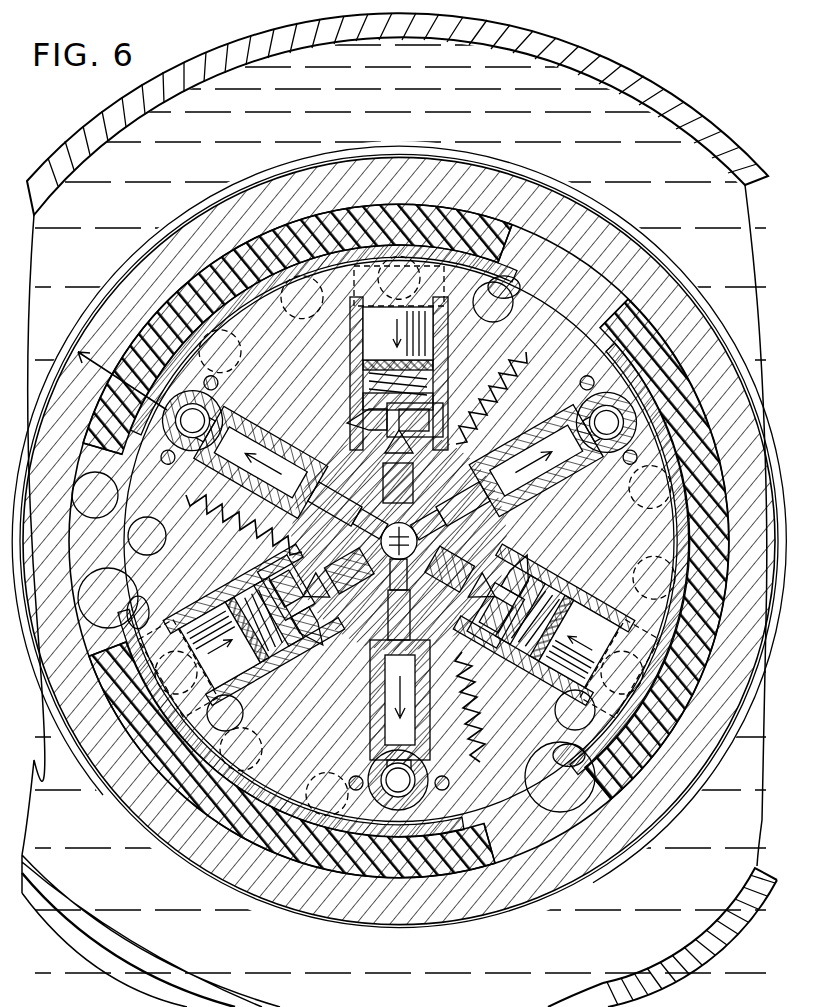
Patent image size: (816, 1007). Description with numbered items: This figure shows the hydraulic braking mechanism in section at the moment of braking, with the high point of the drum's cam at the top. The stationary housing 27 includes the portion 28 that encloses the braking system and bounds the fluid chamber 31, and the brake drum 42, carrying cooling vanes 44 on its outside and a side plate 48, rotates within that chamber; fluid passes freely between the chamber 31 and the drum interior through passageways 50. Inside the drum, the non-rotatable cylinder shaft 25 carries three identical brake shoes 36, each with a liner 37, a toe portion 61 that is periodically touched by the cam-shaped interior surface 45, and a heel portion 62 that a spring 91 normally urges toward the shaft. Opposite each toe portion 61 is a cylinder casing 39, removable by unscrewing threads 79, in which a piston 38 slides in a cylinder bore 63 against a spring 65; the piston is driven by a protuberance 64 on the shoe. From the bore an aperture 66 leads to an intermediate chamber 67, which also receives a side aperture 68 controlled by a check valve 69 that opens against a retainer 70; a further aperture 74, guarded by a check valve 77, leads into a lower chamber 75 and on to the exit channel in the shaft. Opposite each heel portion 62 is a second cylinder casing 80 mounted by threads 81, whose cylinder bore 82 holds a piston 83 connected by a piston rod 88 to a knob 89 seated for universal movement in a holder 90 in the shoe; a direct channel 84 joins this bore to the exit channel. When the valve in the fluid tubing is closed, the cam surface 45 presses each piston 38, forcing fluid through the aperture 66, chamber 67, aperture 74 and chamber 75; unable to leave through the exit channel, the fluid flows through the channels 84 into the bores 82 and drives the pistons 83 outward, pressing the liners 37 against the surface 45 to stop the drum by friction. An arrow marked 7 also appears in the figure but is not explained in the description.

The section line arrow 7 is at (122, 369).
The cylinder shaft 25 is at (505, 514).
The housing 27 is at (696, 107).
The remaining portion of the housing 28 is at (72, 140).
The chamber for fluid 31 is at (123, 173).
The brake shoe 36 is at (399, 538).
The liner 37 is at (437, 520).
The piston 38 is at (370, 330).
The cylinder casing 39 is at (446, 360).
The brake drum 42 is at (399, 540).
The vanes 44 is at (399, 494).
The interior surface 45 is at (399, 541).
The side plate 48 is at (393, 497).
The passageways 50 is at (128, 540).
The toe portion 61 is at (378, 485).
The heel portion 62 is at (396, 582).
The cylinder bore 63 is at (352, 345).
The protuberance 64 is at (387, 291).
The spring 65 is at (446, 368).
The aperture 66 is at (365, 388).
The intermediate chamber 67 is at (447, 388).
The aperture 68 is at (350, 415).
The check valve 69 is at (360, 424).
The retainer 70 is at (440, 410).
The aperture 74 is at (329, 426).
The lower chamber 75 is at (405, 460).
The check valve 77 is at (345, 452).
The threads 79 is at (345, 514).
The second cylinder casing 80 is at (250, 425).
The threads 81 is at (360, 655).
The cylinder bore 82 is at (250, 490).
The piston 83 is at (235, 478).
The direct channel 84 is at (365, 680).
The piston rod 88 is at (185, 462).
The knob 89 is at (228, 400).
The holder 90 is at (215, 378).
The spring 91 is at (210, 545).